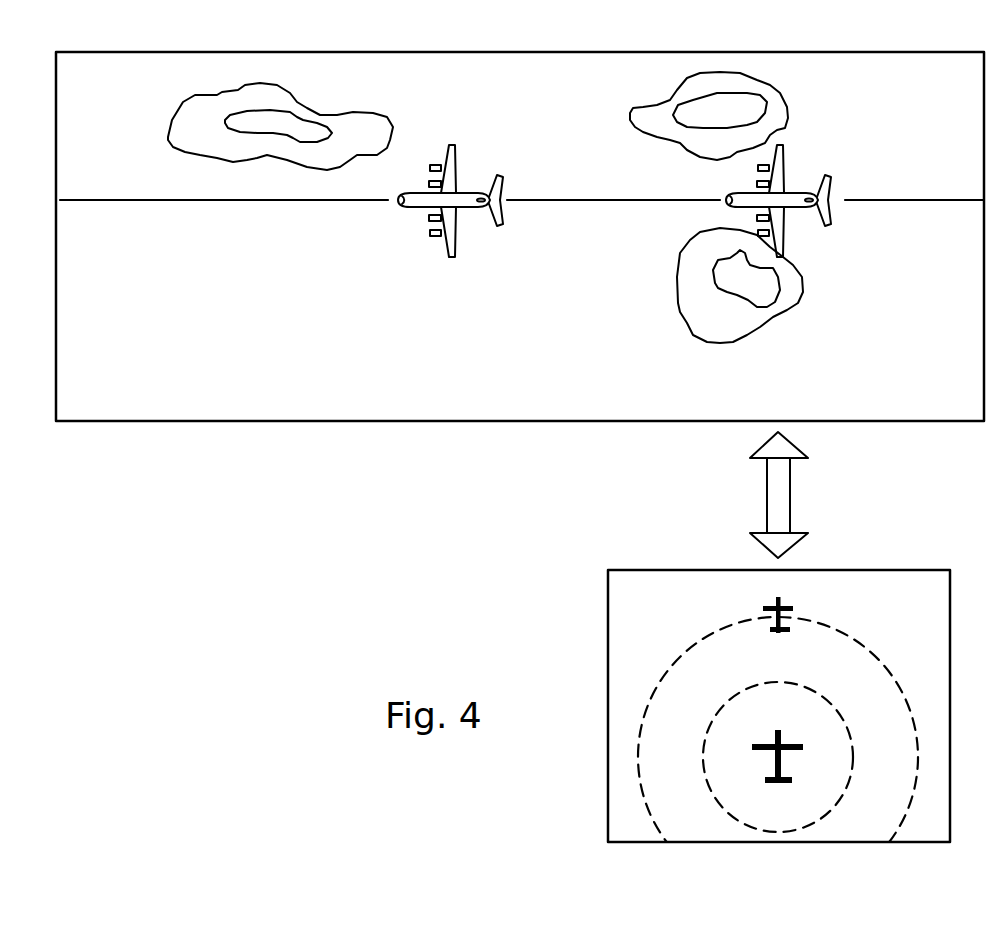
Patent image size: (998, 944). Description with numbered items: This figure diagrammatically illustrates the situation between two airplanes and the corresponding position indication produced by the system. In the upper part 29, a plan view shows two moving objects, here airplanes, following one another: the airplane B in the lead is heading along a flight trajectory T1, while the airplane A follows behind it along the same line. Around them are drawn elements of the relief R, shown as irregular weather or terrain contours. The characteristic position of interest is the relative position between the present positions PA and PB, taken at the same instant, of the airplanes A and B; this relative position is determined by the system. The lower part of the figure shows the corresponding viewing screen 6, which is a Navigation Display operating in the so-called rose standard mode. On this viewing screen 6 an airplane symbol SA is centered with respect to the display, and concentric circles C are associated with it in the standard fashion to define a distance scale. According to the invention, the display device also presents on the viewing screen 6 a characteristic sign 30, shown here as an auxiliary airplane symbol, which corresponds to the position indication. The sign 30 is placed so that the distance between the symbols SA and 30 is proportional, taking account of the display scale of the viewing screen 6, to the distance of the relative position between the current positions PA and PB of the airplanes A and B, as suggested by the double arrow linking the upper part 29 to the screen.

The relief R is at (392, 122).
The flight trajectory T1 is at (216, 200).
The second moving object B is at (468, 207).
The present position of moving object B PB is at (481, 160).
The first moving object A is at (797, 212).
The present position of moving object A PA is at (813, 168).
The upper part 29 is at (393, 421).
The viewing screen 6 is at (915, 842).
The concentric circles C is at (702, 767).
The airplane symbol SA is at (778, 785).
The characteristic sign 30 is at (775, 603).